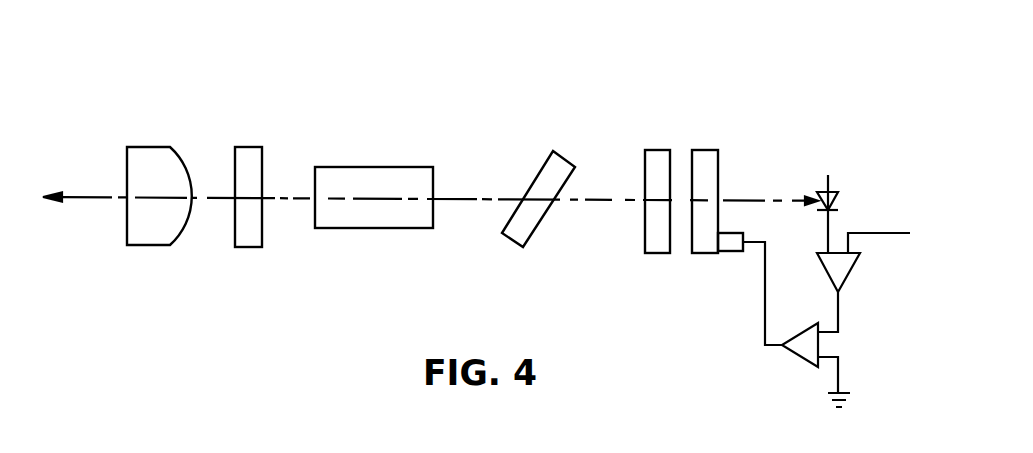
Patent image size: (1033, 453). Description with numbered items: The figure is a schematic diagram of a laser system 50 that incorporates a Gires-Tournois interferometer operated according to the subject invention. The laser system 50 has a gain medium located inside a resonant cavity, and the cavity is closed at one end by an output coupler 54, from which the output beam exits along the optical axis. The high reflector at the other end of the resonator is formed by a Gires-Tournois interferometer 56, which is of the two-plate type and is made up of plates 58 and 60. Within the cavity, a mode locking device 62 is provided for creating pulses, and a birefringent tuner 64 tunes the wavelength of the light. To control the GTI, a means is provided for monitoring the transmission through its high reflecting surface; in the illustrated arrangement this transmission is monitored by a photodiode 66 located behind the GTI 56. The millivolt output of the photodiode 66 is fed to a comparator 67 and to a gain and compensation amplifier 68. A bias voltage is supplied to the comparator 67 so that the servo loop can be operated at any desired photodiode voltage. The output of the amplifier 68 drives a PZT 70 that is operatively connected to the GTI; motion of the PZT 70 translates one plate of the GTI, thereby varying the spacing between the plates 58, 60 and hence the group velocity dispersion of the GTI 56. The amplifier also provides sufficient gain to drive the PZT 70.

The laser system 50 is at (533, 80).
The output coupler 54 is at (147, 147).
The Gires-Tournois interferometer 56 is at (684, 158).
The plate 58 is at (733, 182).
The plate 60 is at (648, 157).
The mode locking device 62 is at (250, 243).
The birefringent tuner 64 is at (527, 235).
The photodiode 66 is at (830, 192).
The comparator 67 is at (847, 270).
The gain and compensation amplifier 68 is at (798, 357).
The PZT 70 is at (732, 245).